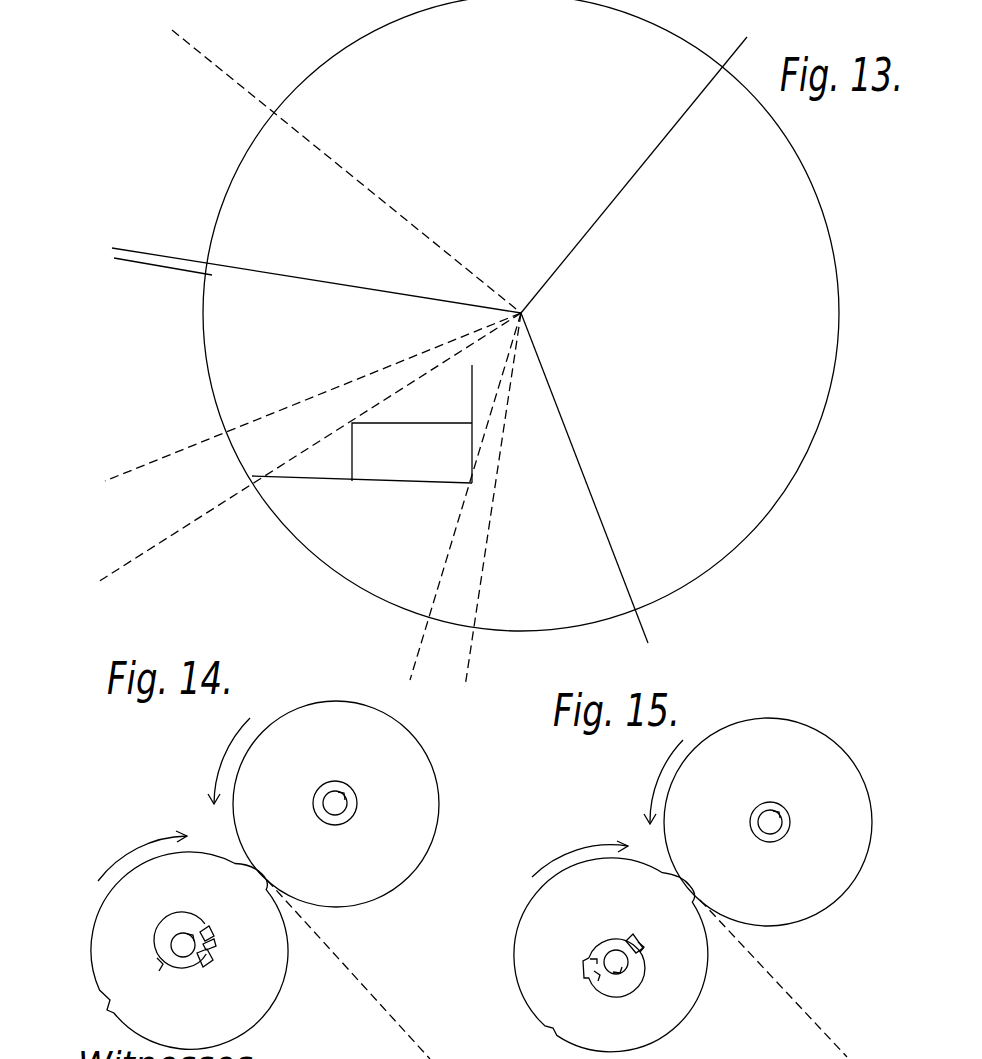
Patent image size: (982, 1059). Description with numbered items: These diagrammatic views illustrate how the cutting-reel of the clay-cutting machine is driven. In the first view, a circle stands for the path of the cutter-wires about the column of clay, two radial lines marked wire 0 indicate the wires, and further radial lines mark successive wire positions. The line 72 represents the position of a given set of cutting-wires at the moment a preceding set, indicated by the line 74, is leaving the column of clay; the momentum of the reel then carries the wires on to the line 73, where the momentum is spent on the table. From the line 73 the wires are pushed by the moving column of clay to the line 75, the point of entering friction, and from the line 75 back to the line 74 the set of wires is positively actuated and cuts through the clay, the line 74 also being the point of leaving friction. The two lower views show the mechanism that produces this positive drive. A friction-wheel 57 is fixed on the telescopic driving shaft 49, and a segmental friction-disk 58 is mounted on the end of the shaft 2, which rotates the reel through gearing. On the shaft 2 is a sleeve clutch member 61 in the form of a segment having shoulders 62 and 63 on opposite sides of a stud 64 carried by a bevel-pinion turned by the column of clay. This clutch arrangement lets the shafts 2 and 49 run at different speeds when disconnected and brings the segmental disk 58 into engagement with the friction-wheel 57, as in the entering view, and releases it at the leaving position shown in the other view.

In FIG. 13, the wire 0 is at (642, 167).
In FIG. 13, the line 72 is at (411, 217).
In FIG. 13, the line 73 is at (401, 294).
In FIG. 13, the line 74 is at (468, 496).
In FIG. 13, the line 75 is at (351, 381).
In FIG. 14, the telescopic rotatable shaft 49 is at (325, 803).
In FIG. 15, the telescopic rotatable shaft 49 is at (758, 820).
In FIG. 14, the friction-wheel 57 is at (323, 804).
In FIG. 15, the friction-wheel 57 is at (758, 822).
In FIG. 14, the segmental friction-disk 58 is at (265, 1004).
In FIG. 15, the segmental friction-disk 58 is at (687, 950).
In FIG. 14, the shaft 2 is at (171, 942).
In FIG. 15, the shaft 2 is at (620, 967).
In FIG. 14, the sleeve clutch member 61 is at (210, 930).
In FIG. 15, the sleeve clutch member 61 is at (599, 976).
In FIG. 14, the shoulder 62 is at (209, 941).
In FIG. 15, the shoulder 62 is at (596, 960).
In FIG. 14, the shoulder 63 is at (161, 964).
In FIG. 15, the shoulder 63 is at (643, 947).
In FIG. 14, the stud 64 is at (204, 967).
In FIG. 15, the stud 64 is at (633, 936).